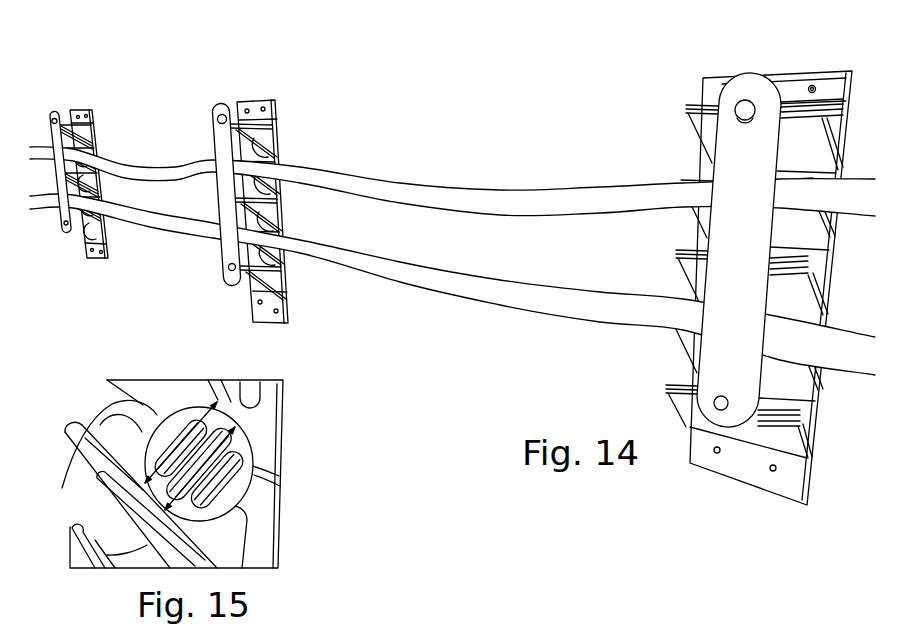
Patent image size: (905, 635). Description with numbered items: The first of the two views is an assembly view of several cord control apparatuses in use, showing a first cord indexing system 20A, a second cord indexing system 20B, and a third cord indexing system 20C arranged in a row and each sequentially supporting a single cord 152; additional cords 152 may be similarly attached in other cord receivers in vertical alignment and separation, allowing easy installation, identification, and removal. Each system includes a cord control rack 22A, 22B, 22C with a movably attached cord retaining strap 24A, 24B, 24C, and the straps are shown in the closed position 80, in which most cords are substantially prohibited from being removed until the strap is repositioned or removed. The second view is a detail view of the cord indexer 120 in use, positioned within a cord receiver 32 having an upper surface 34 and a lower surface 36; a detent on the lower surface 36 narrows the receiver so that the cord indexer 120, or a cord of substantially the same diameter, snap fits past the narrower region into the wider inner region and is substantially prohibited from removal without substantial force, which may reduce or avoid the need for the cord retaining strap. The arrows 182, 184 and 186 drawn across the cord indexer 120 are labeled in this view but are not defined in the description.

In FIG. 14, the first cord indexing system 20A is at (104, 165).
In FIG. 14, the second cord indexing system 20B is at (286, 193).
In FIG. 14, the third cord indexing system 20C is at (759, 259).
In FIG. 14, the cord control rack 22A is at (105, 224).
In FIG. 14, the cord control rack 22B is at (290, 268).
In FIG. 14, the cord control rack 22C is at (818, 385).
In FIG. 14, the cord retaining strap 24A is at (66, 222).
In FIG. 14, the cord retaining strap 24B is at (232, 262).
In FIG. 14, the cord retaining strap 24C is at (714, 296).
In FIG. 14, the cord 152 is at (507, 187).
In FIG. 14, the closed position 80 is at (452, 259).
In FIG. 15, the upper surface 34 is at (213, 388).
In FIG. 15, the lower surface 36 is at (87, 480).
In FIG. 15, the cord indexer 120 is at (253, 478).
In FIG. 15, the cord receiver 32 is at (250, 510).
In FIG. 15, the cable orientation 182 is at (191, 442).
In FIG. 15, the second direction 184 is at (238, 438).
In FIG. 15, the first direction 186 is at (220, 400).